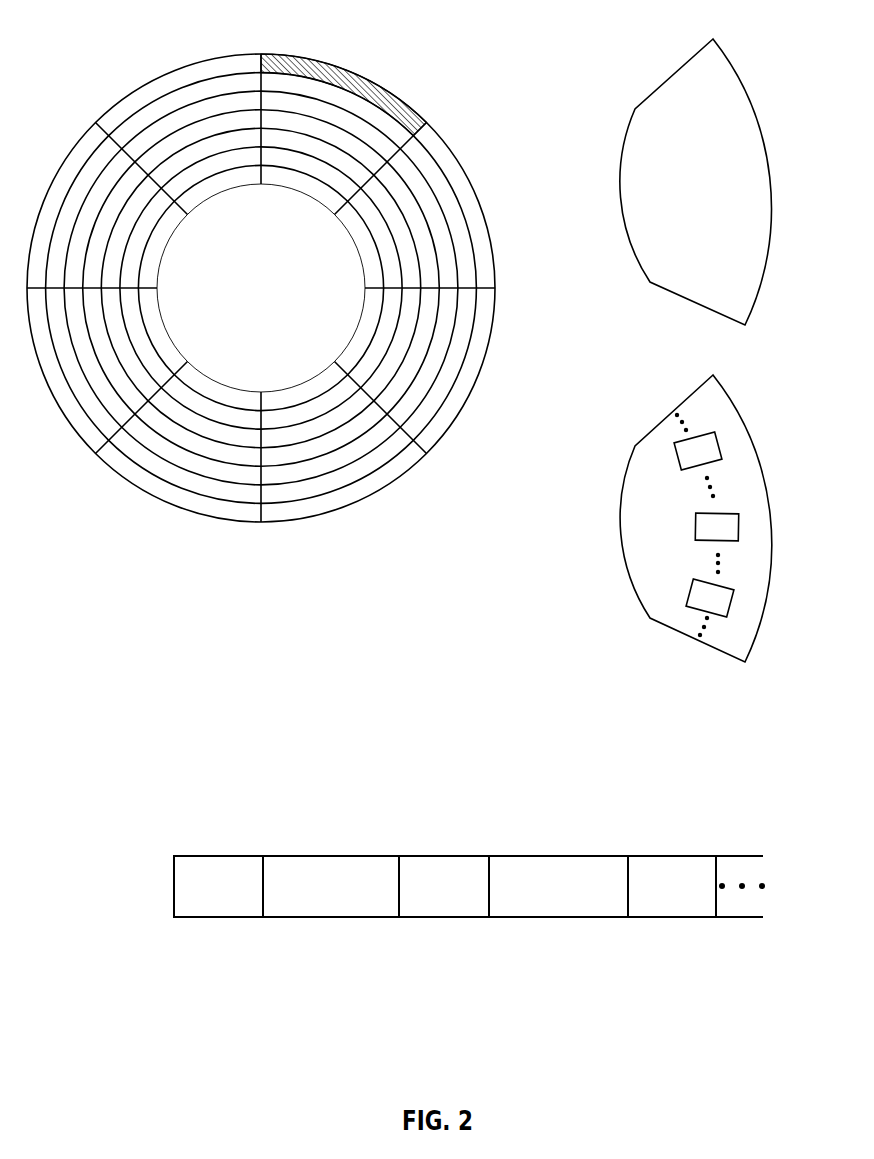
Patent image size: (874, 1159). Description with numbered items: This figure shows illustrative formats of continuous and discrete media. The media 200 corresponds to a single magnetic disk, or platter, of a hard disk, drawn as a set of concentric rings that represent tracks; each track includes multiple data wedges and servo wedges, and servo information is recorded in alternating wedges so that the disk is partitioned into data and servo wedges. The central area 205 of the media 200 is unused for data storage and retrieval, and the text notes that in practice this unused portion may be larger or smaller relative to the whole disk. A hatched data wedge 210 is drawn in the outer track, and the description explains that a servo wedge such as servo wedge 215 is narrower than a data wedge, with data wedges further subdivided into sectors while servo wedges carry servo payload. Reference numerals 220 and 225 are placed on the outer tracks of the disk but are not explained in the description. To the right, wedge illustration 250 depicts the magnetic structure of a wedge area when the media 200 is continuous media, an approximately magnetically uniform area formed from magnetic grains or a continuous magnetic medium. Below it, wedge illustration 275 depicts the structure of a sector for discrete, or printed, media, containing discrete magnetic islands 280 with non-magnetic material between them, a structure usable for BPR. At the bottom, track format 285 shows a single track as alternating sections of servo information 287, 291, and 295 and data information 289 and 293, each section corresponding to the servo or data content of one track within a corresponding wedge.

The media 200 is at (86, 37).
The area 205 is at (165, 72).
The data wedge 210 is at (340, 66).
The servo wedge 215 is at (470, 181).
The track 220 is at (478, 381).
The track 225 is at (363, 501).
The wedge illustration 250 is at (605, 39).
The wedge illustration 275 is at (605, 375).
The magnetic islands 280 is at (733, 438).
The track format 285 is at (162, 811).
The servo information 287 is at (259, 932).
The data information 289 is at (267, 932).
The servo information 291 is at (403, 932).
The data information 293 is at (624, 932).
The servo information 295 is at (632, 932).